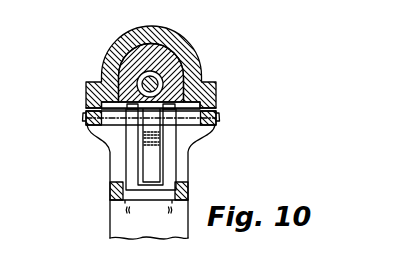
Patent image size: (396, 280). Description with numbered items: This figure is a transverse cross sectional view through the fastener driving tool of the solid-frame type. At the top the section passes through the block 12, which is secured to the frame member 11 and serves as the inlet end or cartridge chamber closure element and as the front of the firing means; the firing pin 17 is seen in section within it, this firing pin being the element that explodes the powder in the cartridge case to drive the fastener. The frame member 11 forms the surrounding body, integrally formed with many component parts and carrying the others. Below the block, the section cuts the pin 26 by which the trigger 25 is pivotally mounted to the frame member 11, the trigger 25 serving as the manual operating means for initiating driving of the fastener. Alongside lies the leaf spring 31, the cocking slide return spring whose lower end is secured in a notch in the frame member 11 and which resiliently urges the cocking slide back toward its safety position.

The frame member 11 is at (185, 48).
The block 12 is at (142, 49).
The firing pin 17 is at (160, 84).
The pin 26 is at (86, 118).
The leaf spring 31 is at (131, 161).
The trigger 25 is at (155, 163).